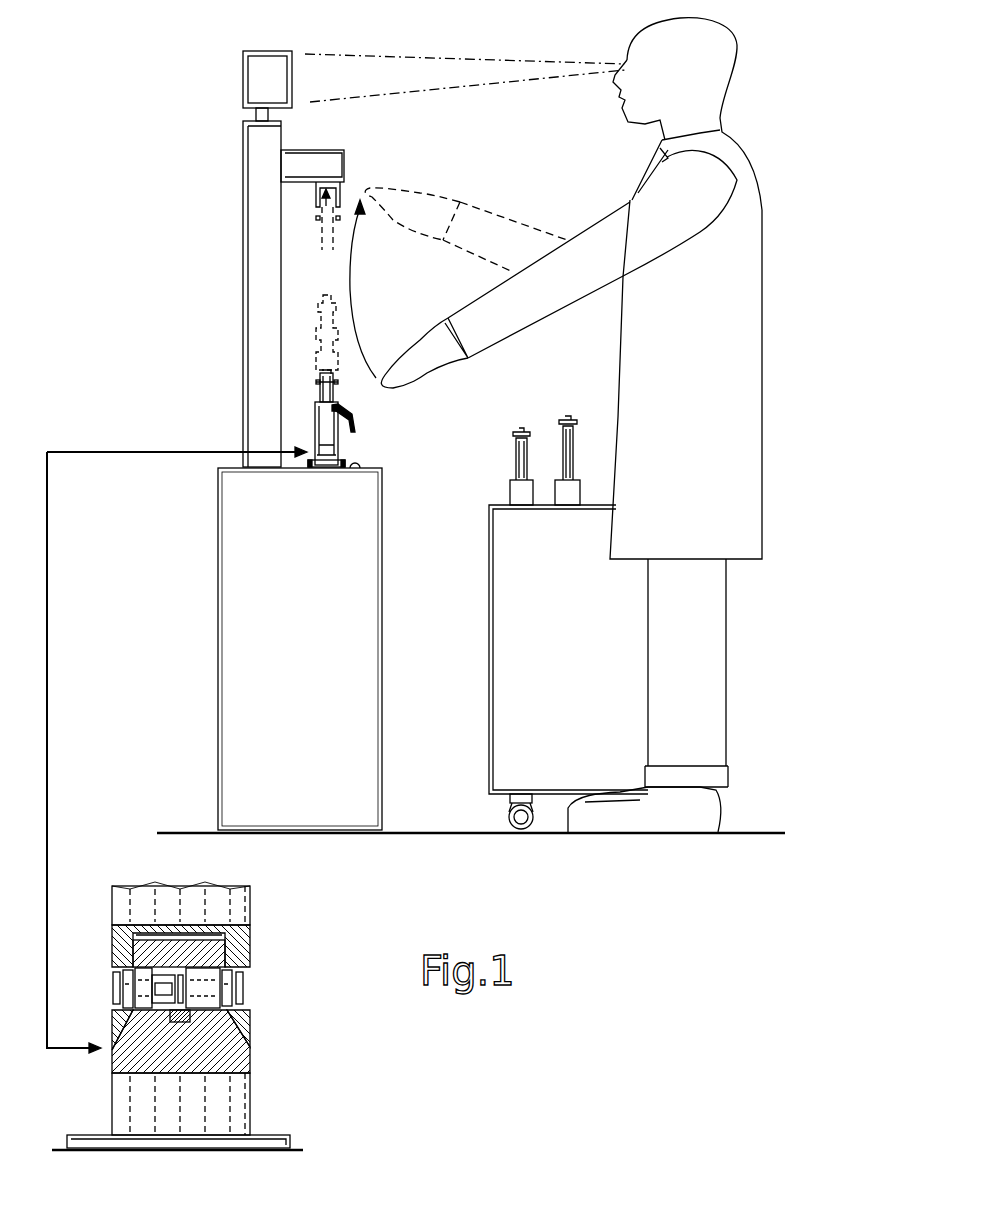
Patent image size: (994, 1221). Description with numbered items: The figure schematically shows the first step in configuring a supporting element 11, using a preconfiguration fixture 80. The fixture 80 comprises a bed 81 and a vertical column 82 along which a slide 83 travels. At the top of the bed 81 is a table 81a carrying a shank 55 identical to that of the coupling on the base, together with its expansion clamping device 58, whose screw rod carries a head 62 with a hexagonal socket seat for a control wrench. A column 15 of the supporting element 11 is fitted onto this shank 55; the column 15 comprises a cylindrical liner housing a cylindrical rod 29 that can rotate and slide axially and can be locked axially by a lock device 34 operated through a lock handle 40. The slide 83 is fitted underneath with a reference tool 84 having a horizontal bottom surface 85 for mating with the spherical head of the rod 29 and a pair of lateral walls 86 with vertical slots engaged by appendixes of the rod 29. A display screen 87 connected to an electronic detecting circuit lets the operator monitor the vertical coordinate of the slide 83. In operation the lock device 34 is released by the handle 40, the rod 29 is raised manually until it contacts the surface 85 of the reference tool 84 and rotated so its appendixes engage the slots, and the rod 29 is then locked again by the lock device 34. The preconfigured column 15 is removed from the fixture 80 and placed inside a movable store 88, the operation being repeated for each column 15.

The supporting element 11 is at (503, 487).
The column 15 is at (371, 418).
The rod 29 is at (331, 394).
The lock device 34 is at (356, 410).
The lock handle 40 is at (350, 425).
The shank 55 is at (250, 953).
The expansion clamping device 58 is at (232, 1027).
The head 62 is at (128, 992).
The preconfiguration fixture 80 is at (262, 649).
The bed 81 is at (245, 648).
The table 81a is at (355, 469).
The vertical column 82 is at (247, 383).
The slide 83 is at (316, 163).
The reference tool 84 is at (343, 193).
The horizontal bottom surface 85 is at (322, 210).
The lateral walls 86 is at (324, 195).
The display screen 87 is at (258, 77).
The movable store 88 is at (539, 617).